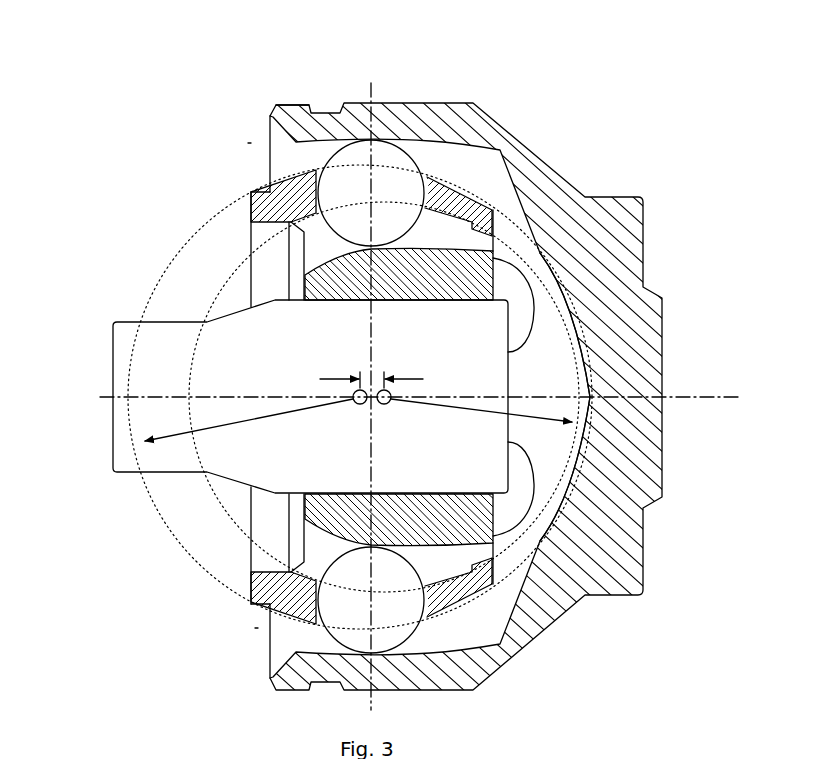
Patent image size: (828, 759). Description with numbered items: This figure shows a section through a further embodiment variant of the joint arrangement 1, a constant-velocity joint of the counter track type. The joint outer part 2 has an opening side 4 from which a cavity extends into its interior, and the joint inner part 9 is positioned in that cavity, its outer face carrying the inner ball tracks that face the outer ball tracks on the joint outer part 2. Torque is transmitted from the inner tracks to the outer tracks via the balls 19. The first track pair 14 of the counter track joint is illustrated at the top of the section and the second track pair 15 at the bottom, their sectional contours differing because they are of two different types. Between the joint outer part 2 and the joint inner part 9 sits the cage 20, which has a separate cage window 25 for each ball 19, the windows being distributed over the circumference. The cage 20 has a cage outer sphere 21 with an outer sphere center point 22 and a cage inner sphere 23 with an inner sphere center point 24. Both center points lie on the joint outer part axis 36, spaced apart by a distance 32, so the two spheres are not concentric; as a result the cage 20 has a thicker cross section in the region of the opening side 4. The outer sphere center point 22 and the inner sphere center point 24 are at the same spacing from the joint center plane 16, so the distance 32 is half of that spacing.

The joint arrangement 1 is at (105, 155).
The joint outer part 2 is at (615, 222).
The opening side 4 is at (127, 300).
The joint inner part 9 is at (498, 505).
The first track pair 14 is at (248, 143).
The second track pair 15 is at (255, 628).
The joint center plane 16 is at (373, 342).
The ball 19 is at (383, 150).
The cage 20 is at (455, 190).
The cage outer sphere 21 is at (192, 237).
The outer sphere center point 22 is at (356, 405).
The cage inner sphere 23 is at (203, 298).
The inner sphere center point 24 is at (390, 405).
The cage window 25 is at (290, 110).
The distance 32 is at (356, 368).
The joint outer part axis 36 is at (700, 392).